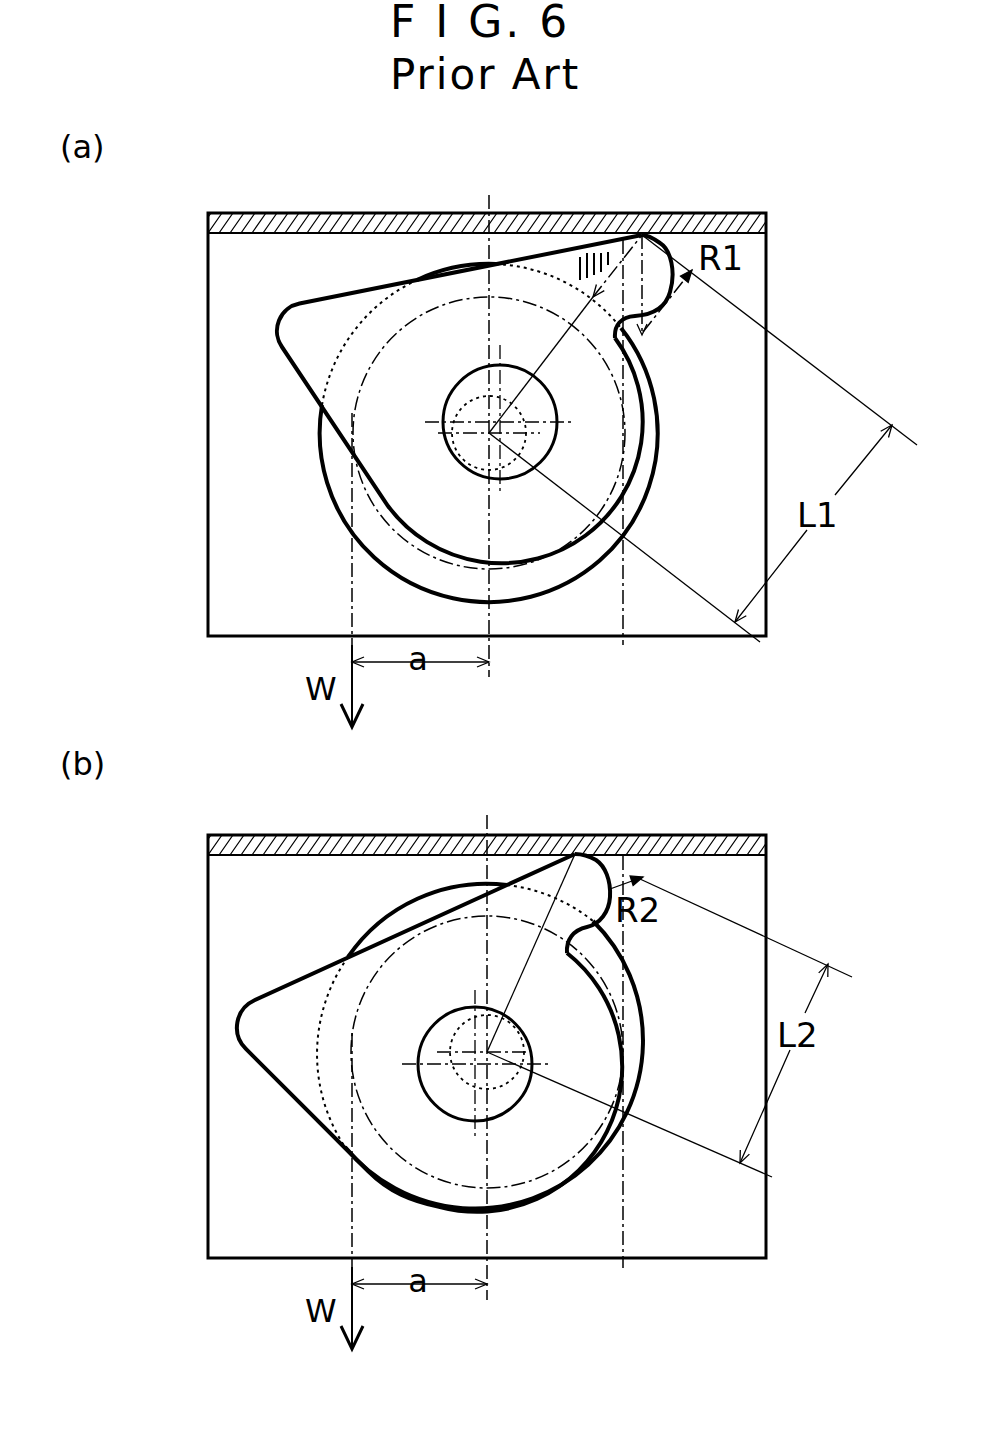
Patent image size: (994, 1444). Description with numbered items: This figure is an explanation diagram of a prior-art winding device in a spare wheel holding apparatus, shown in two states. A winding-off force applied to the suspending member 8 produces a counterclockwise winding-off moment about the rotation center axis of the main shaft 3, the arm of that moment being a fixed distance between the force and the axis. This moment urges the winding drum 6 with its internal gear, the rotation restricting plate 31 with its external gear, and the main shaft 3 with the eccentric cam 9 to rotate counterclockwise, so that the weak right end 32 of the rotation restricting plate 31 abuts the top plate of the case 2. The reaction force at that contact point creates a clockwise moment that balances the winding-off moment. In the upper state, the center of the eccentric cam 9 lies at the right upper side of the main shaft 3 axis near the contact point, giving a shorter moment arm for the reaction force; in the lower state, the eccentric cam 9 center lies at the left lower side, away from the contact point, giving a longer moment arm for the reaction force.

The case 2 is at (208, 222).
The main shaft 3 is at (445, 414).
The winding drum 6 is at (322, 477).
The suspending member 8 is at (352, 588).
The eccentric cam 9 is at (462, 372).
The rotation restricting plate 31 is at (360, 297).
The right end of the rotation restricting plate 32 is at (653, 258).